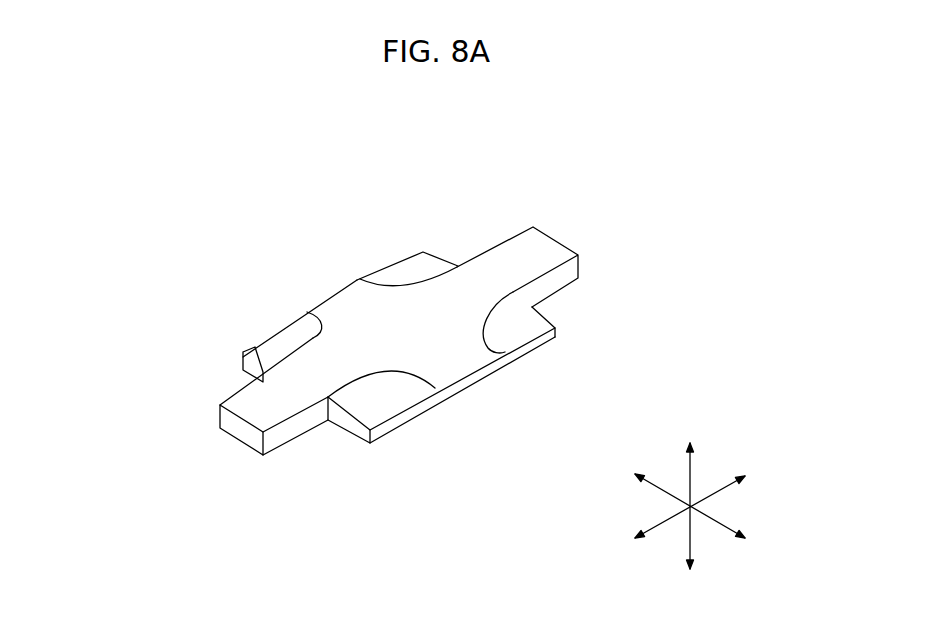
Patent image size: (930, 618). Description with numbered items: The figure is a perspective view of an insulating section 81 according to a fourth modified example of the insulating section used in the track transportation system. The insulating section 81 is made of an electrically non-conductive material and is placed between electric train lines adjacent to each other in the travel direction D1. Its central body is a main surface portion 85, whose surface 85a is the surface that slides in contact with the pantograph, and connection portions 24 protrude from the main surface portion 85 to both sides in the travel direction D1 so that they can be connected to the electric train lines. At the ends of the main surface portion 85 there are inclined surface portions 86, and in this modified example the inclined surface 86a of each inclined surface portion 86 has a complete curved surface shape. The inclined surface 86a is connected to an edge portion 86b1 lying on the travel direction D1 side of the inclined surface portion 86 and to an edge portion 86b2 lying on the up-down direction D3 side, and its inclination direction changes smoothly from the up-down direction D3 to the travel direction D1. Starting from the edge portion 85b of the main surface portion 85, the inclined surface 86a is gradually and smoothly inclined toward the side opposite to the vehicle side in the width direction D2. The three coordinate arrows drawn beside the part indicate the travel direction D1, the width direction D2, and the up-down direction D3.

The insulating section 81 is at (656, 173).
The connection portion 24 is at (258, 413).
The main surface portion 85 is at (345, 310).
The surface of the main surface portion 85a is at (441, 358).
The edge portion of the main surface portion 85b is at (410, 283).
The inclined surface portion 86 is at (390, 332).
The inclined surface 86a is at (430, 263).
The edge portion on the travel direction side 86b1 is at (450, 258).
The edge portion on the up-down direction side 86b2 is at (403, 257).
The travel direction D1 is at (713, 492).
The width direction D2 is at (692, 480).
The up-down direction D3 is at (710, 520).